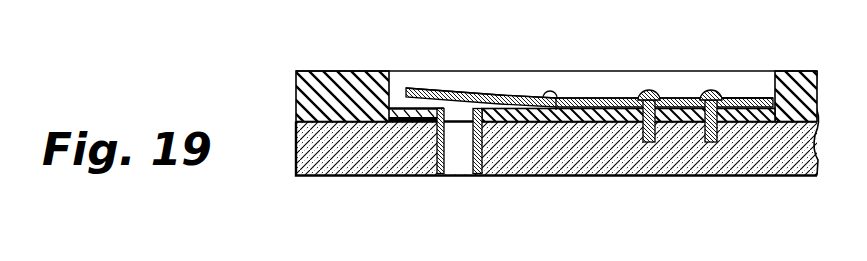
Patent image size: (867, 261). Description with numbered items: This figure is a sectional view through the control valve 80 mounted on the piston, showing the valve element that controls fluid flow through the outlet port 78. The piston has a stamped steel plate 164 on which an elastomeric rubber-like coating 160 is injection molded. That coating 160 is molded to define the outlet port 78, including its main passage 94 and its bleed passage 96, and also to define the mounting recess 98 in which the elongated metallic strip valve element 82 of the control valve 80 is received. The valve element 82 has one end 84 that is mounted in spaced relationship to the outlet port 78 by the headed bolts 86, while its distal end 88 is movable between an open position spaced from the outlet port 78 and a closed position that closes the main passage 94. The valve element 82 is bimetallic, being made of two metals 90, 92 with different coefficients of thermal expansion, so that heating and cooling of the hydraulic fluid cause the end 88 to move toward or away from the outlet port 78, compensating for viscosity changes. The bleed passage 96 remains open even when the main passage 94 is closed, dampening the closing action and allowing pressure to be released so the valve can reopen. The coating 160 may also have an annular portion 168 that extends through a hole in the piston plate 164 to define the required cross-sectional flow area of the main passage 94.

The coating 160 is at (379, 71).
The distal end 88 is at (436, 89).
The metal 90 is at (489, 94).
The strip valve element 82 is at (531, 88).
The control valve 80 is at (573, 88).
The headed bolts 86 is at (702, 90).
The one end 84 is at (742, 97).
The stamped steel plate 164 is at (325, 157).
The bleed passage 96 is at (412, 123).
The annular portion 168 is at (433, 160).
The outlet port 78 is at (465, 150).
The main passage 94 is at (477, 172).
The metal 92 is at (515, 110).
The mounting recess 98 is at (556, 100).